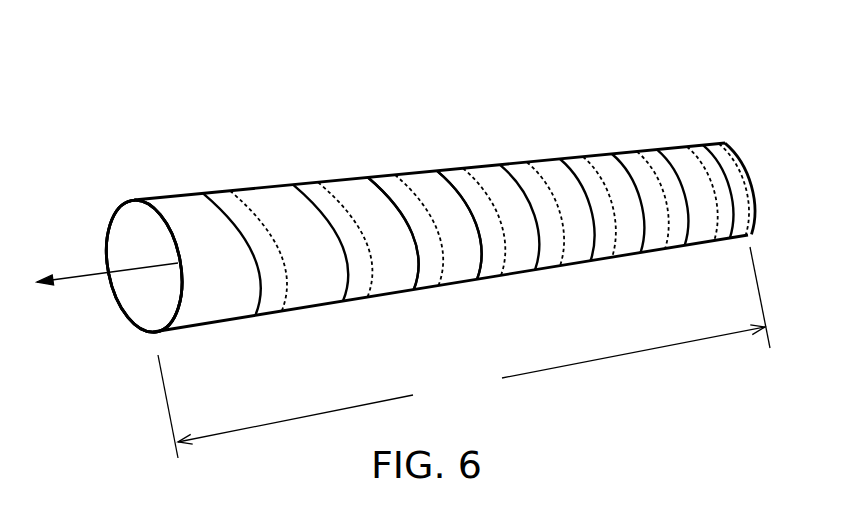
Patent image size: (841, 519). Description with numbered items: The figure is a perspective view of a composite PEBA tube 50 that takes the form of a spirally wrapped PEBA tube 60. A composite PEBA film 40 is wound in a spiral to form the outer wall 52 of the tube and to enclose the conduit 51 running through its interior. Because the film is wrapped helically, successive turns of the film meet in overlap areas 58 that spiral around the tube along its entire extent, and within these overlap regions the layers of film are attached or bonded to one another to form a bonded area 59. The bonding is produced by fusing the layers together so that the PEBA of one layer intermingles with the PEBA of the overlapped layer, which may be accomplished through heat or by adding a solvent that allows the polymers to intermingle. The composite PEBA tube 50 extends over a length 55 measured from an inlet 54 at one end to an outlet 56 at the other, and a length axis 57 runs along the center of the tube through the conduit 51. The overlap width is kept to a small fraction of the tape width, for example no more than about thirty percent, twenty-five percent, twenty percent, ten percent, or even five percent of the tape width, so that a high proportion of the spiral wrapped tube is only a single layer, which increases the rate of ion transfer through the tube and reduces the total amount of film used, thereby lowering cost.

The composite PEBA film 40 is at (188, 208).
The composite PEBA tube 50 is at (403, 198).
The conduit 51 is at (118, 262).
The outer wall 52 is at (129, 200).
The inlet 54 is at (137, 255).
The length 55 is at (464, 352).
The outlet 56 is at (753, 197).
The length axis 57 is at (78, 278).
The overlap areas 58 is at (293, 183).
The bonded area 59 is at (517, 177).
The spirally wrapped PEBA tube 60 is at (417, 175).